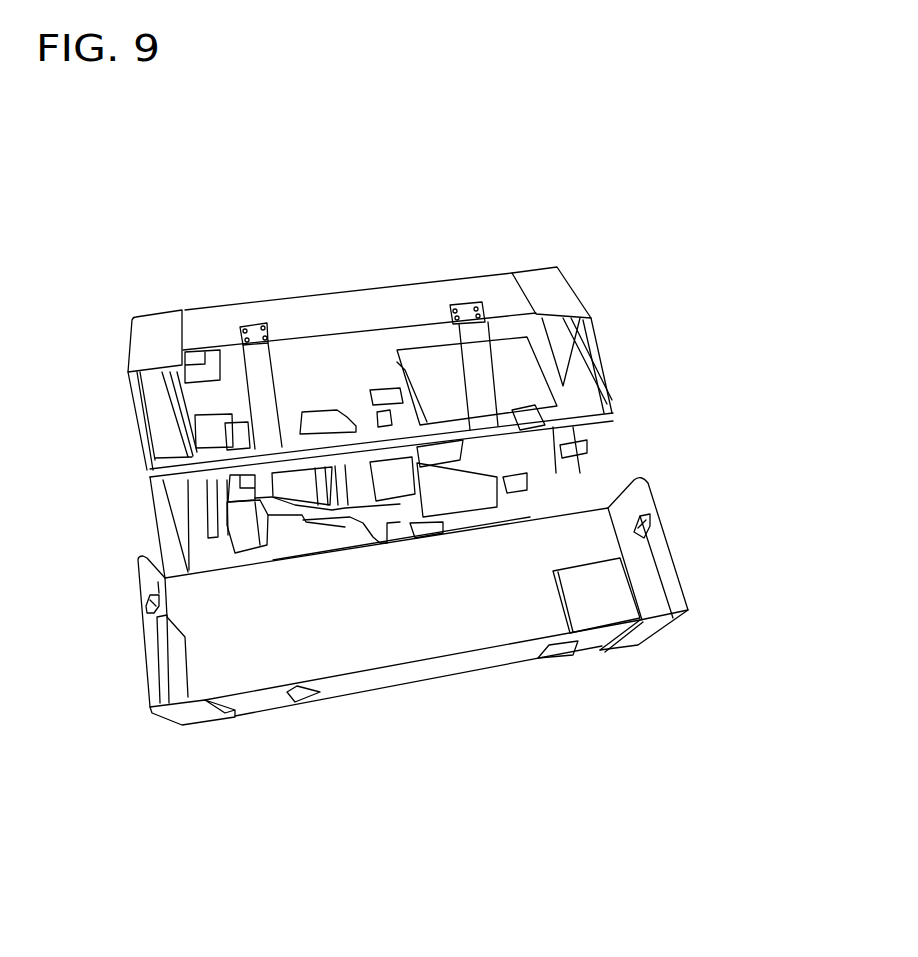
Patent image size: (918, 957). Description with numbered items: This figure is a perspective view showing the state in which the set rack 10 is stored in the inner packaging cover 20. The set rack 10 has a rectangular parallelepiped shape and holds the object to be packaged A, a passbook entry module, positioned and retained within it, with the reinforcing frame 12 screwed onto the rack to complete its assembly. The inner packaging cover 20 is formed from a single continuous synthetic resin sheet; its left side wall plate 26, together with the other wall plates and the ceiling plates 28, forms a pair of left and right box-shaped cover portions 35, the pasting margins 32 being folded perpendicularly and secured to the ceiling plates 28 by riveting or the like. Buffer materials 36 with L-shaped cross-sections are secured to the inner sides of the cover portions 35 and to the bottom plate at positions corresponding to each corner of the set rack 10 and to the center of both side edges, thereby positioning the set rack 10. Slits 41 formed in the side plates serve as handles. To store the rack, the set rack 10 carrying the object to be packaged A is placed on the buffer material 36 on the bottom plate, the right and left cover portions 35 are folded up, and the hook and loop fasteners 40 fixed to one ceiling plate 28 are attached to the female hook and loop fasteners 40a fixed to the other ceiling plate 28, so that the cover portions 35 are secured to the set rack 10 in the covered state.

The set rack 10 is at (152, 503).
The reinforcing frame 12 is at (583, 407).
The inner packaging cover 20 is at (563, 218).
The left side wall plate 26 is at (332, 643).
The ceiling plate 28 is at (380, 300).
The pasting margin 32 is at (157, 330).
The cover portion 35 is at (123, 330).
The buffer material 36 is at (210, 678).
The hook and loop fastener 40 is at (255, 324).
The female hook and loop fastener 40a is at (307, 693).
The slit 41 is at (148, 610).
The object to be packaged A is at (532, 387).